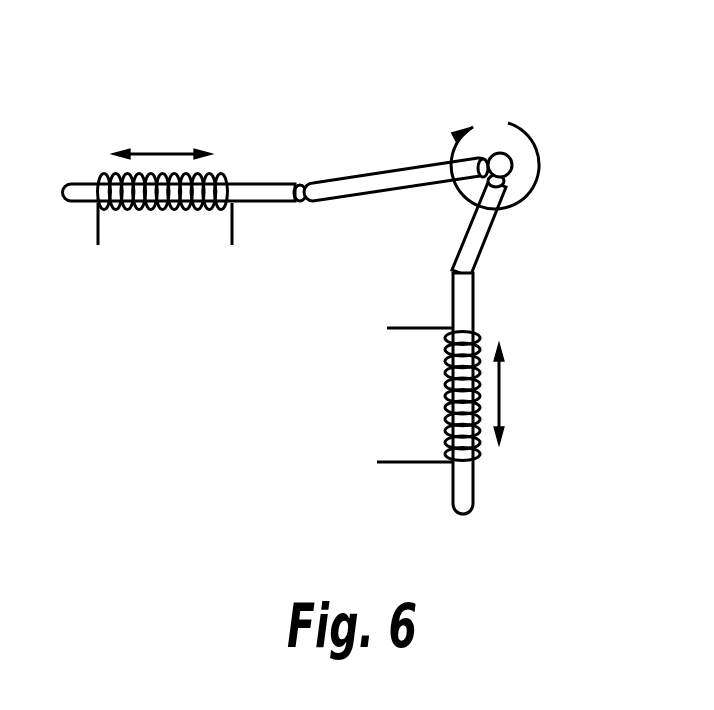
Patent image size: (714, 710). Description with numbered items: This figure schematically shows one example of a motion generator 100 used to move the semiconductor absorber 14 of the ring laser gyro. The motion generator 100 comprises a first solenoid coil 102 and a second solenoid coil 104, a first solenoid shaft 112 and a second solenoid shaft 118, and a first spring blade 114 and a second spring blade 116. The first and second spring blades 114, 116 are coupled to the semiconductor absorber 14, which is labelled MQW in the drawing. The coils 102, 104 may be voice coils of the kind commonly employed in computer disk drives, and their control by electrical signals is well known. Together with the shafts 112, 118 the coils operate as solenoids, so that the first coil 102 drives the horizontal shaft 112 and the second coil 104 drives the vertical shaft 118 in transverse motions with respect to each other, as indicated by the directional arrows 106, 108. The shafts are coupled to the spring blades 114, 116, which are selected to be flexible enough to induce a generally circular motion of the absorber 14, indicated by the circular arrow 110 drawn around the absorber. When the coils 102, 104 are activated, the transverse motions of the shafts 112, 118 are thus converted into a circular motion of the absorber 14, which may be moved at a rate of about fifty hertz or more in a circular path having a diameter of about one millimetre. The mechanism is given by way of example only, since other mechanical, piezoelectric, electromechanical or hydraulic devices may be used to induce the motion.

The motion generator 100 is at (339, 289).
The first solenoid coil 102 is at (162, 210).
The second solenoid coil 104 is at (478, 460).
The directional arrow 106 is at (158, 151).
The directional arrow 108 is at (500, 393).
The circular arrow 110 is at (509, 124).
The first solenoid shaft 112 is at (272, 180).
The first spring blade 114 is at (377, 201).
The second spring blade 116 is at (480, 247).
The second solenoid shaft 118 is at (455, 504).
The semiconductor absorber 14 is at (539, 152).